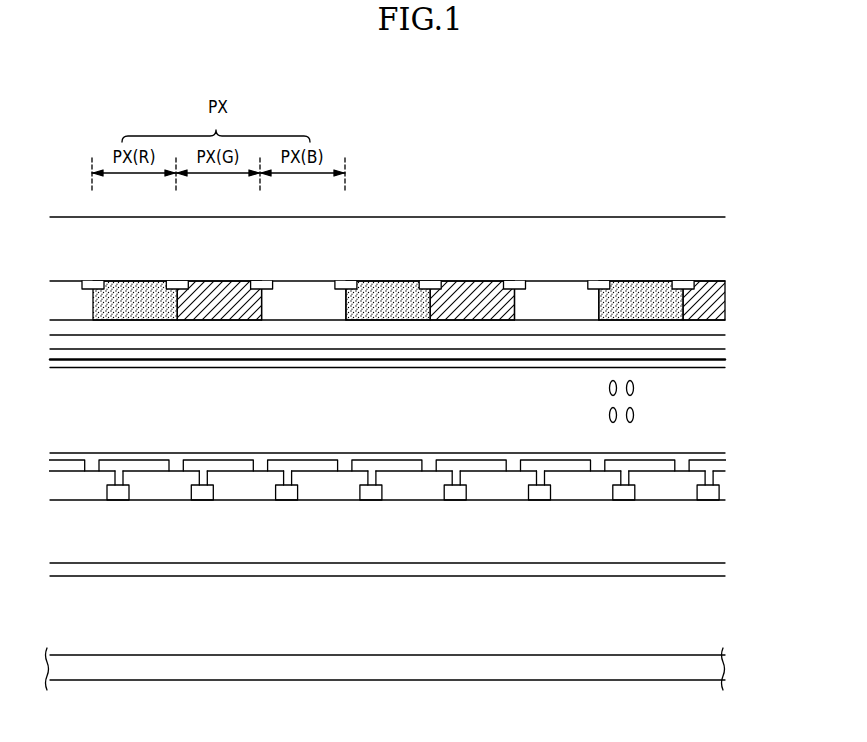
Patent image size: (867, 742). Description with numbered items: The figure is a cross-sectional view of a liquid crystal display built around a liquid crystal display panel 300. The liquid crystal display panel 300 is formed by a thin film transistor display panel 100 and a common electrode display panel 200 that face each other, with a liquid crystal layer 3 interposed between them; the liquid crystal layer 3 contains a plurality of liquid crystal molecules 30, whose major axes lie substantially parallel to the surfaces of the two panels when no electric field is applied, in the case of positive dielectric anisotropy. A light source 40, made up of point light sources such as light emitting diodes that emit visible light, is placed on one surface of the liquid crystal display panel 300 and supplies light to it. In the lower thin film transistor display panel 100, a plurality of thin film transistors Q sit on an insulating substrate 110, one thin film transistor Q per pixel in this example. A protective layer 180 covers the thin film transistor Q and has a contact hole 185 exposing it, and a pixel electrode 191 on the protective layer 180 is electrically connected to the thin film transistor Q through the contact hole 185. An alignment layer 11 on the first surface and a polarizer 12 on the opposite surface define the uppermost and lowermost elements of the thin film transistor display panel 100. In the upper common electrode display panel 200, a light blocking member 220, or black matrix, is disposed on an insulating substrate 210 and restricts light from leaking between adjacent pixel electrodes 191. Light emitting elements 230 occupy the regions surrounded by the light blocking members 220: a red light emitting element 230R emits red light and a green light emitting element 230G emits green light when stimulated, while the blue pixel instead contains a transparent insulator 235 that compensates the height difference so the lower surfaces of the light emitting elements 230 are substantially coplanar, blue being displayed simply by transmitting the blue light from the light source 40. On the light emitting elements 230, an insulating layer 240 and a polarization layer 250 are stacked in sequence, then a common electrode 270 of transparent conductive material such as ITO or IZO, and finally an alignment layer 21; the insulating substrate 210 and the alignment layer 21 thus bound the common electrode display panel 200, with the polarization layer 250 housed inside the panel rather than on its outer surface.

The liquid crystal display panel 300 is at (769, 218).
The common electrode display panel 200 is at (733, 217).
The thin film transistor display panel 100 is at (733, 455).
The liquid crystal layer 3 is at (733, 390).
The liquid crystal molecules 30 is at (634, 388).
The alignment layer 21 is at (691, 366).
The alignment layer 11 is at (690, 459).
The insulating substrate 210 is at (622, 228).
The light blocking member 220 is at (511, 288).
The light emitting elements 230 is at (363, 161).
The red light emitting element 230R is at (370, 290).
The green light emitting element 230G is at (452, 290).
The transparent insulator 235 is at (560, 300).
The insulating layer 240 is at (107, 327).
The polarization layer 250 is at (163, 340).
The common electrode 270 is at (220, 353).
The contact hole 185 is at (372, 484).
The protective layer 180 is at (239, 488).
The pixel electrode 191 is at (321, 466).
The thin film transistor Q is at (118, 492).
The insulating substrate 110 is at (511, 546).
The polarizer 12 is at (596, 570).
The light source 40 is at (733, 649).